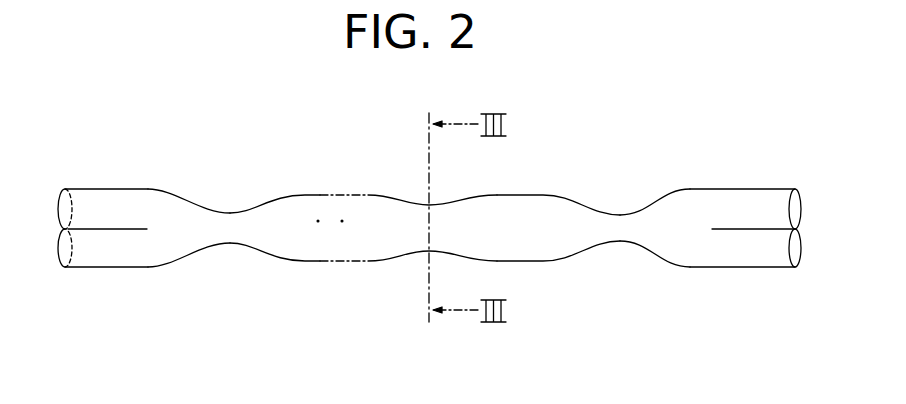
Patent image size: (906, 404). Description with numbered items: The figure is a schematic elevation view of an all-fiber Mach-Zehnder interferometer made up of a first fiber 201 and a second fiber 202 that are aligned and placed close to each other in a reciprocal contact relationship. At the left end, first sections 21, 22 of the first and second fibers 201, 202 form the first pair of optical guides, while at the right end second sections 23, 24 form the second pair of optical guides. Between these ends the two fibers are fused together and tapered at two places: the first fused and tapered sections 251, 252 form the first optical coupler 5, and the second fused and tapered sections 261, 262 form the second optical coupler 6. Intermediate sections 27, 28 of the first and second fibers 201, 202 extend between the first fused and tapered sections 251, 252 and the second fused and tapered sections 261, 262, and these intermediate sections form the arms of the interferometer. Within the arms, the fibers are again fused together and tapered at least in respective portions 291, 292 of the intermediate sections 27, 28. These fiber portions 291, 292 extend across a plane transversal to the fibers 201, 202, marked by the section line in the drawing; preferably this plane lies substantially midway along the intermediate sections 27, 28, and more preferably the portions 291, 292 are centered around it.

The first optical coupler 5 is at (251, 124).
The second optical coupler 6 is at (592, 260).
The first section of the first fiber 21 is at (110, 205).
The first section of the second fiber 22 is at (110, 265).
The second section of the first fiber 23 is at (732, 189).
The second section of the second fiber 24 is at (708, 268).
The intermediate section of the first fiber 27 is at (330, 186).
The intermediate section of the second fiber 28 is at (365, 271).
The first fiber 201 is at (688, 180).
The second fiber 202 is at (742, 277).
The first fused and tapered section of the first fiber 251 is at (232, 222).
The first fused and tapered section of the second fiber 252 is at (232, 228).
The second fused and tapered section of the first fiber 261 is at (610, 218).
The second fused and tapered section of the second fiber 262 is at (619, 245).
The fused and tapered portion of the first intermediate section 291 is at (400, 200).
The fused and tapered portion of the second intermediate section 292 is at (393, 262).